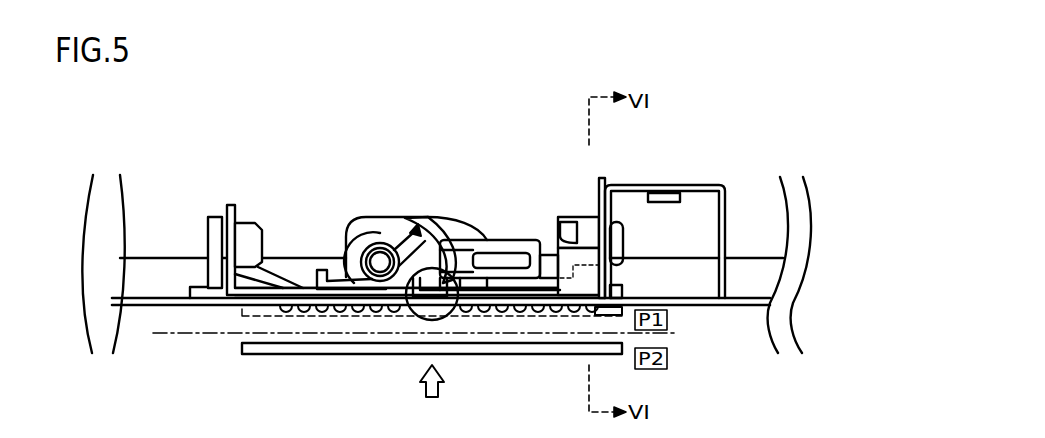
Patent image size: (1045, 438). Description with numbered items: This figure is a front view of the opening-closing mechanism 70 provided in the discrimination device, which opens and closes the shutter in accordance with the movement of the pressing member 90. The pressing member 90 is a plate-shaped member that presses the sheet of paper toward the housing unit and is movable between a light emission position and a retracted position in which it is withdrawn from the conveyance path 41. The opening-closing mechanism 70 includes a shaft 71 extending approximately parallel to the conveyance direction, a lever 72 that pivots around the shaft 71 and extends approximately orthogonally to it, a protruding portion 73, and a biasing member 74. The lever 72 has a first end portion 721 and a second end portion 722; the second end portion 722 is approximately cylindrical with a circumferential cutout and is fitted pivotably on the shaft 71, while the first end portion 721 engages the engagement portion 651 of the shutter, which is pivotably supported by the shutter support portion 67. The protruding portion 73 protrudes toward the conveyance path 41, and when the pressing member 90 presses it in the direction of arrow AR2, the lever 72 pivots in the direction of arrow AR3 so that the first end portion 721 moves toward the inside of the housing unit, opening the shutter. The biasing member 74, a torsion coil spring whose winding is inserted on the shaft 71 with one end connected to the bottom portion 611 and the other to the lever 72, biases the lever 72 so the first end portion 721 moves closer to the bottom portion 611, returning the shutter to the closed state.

The opening-closing mechanism 70 is at (269, 155).
The engagement portion 651 is at (245, 233).
The second end portion 722 is at (347, 232).
The shaft 71 is at (380, 260).
The biasing member 74 is at (395, 245).
The arrow AR3 is at (443, 233).
The protruding portion 73 is at (453, 273).
The lever 72 is at (497, 240).
The first end portion 721 is at (618, 253).
The shutter support portion 67 is at (663, 185).
The bottom portion 611 is at (740, 307).
The conveyance path 41 is at (170, 335).
The pressing member 90 is at (240, 310).
The arrow AR2 is at (443, 386).